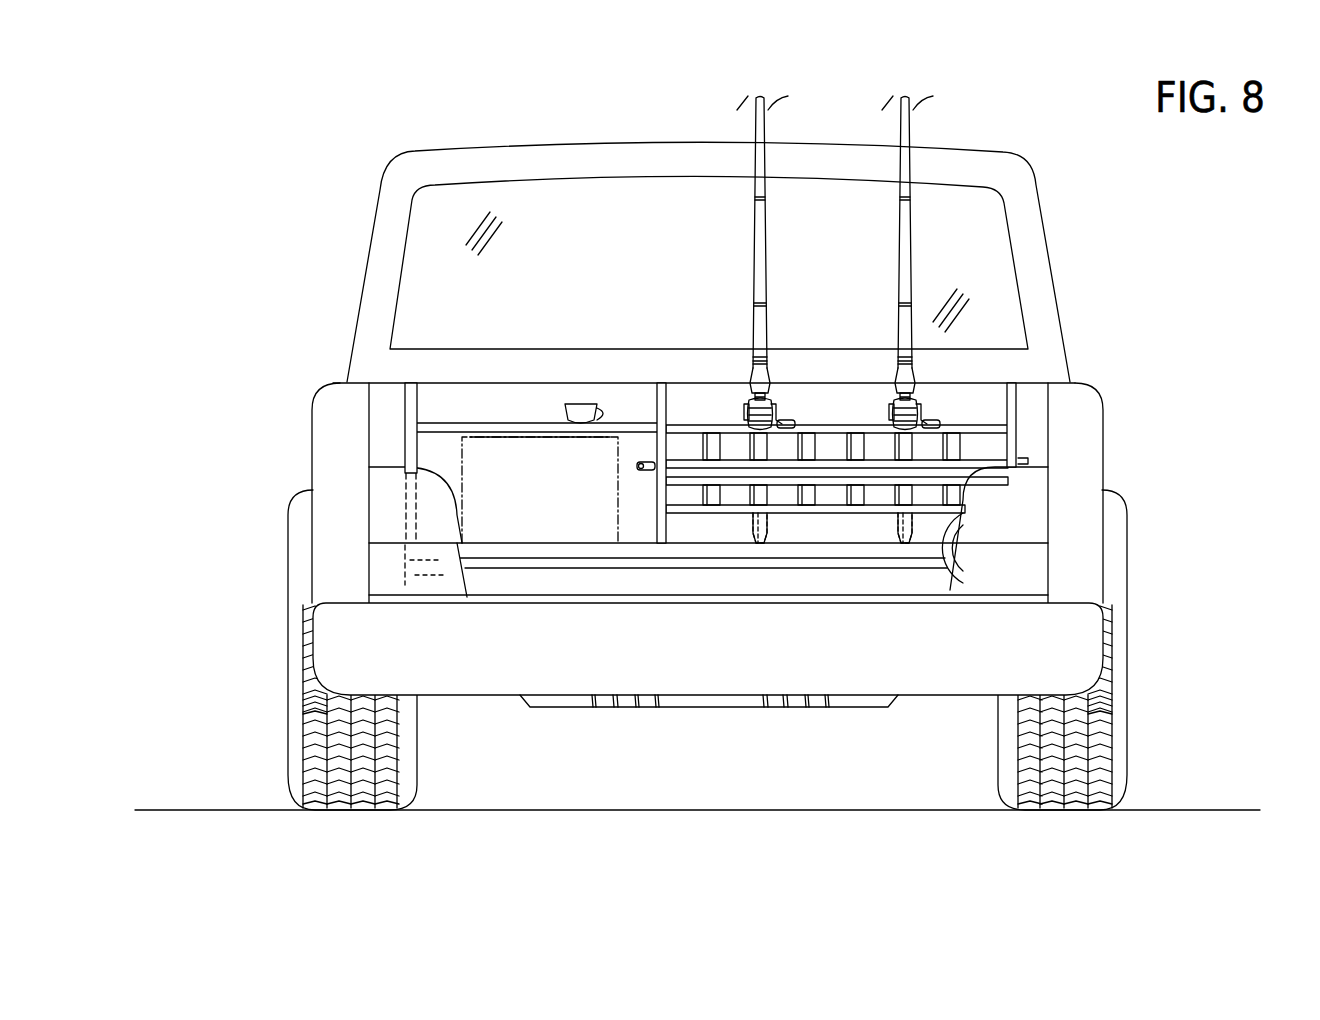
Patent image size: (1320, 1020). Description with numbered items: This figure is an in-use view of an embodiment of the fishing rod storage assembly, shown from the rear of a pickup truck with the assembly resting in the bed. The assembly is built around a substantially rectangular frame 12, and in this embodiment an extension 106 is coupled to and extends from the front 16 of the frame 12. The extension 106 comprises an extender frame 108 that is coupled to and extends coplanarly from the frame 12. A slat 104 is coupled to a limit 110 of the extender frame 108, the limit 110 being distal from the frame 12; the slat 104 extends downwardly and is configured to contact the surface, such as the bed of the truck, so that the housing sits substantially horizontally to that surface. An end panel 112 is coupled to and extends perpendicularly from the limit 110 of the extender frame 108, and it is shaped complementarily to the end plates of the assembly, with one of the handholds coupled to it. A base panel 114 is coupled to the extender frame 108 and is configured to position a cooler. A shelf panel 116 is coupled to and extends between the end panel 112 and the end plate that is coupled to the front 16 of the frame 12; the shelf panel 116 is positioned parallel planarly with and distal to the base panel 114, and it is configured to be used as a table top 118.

The frame 12 is at (744, 551).
The front 16 is at (641, 549).
The slat 104 is at (394, 574).
The extension 106 is at (397, 468).
The extender frame 108 is at (464, 556).
The limit 110 is at (389, 553).
The end panel 112 is at (318, 407).
The base panel 114 is at (648, 412).
The shelf panel 116 is at (463, 320).
The table top 118 is at (461, 336).